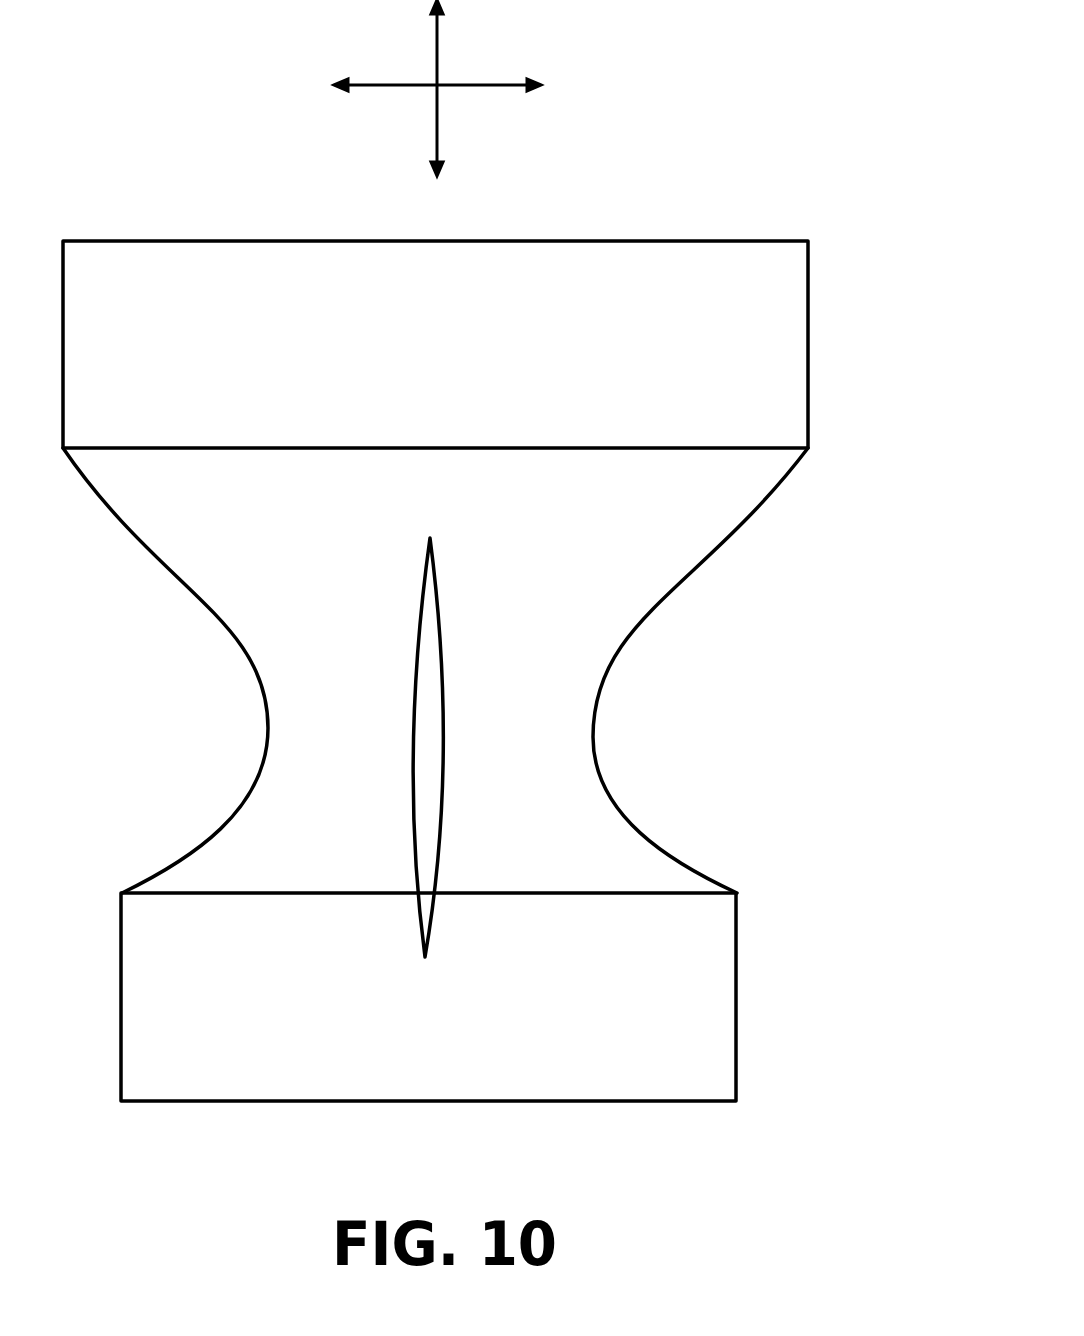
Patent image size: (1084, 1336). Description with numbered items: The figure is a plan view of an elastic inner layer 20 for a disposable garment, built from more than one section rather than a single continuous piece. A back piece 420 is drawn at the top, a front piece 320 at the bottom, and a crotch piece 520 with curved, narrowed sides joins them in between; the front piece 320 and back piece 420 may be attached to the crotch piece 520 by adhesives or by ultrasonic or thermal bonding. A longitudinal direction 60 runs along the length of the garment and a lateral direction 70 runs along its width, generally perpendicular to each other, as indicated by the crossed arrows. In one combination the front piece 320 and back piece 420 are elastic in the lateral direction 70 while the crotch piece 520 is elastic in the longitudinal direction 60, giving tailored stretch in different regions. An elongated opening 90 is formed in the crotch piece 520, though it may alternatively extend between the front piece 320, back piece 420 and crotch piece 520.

The elastic inner layer 20 is at (770, 193).
The longitudinal direction 60 is at (438, 42).
The lateral direction 70 is at (492, 88).
The opening 90 is at (435, 795).
The front piece 320 is at (688, 1015).
The back piece 420 is at (753, 365).
The crotch piece 520 is at (580, 681).